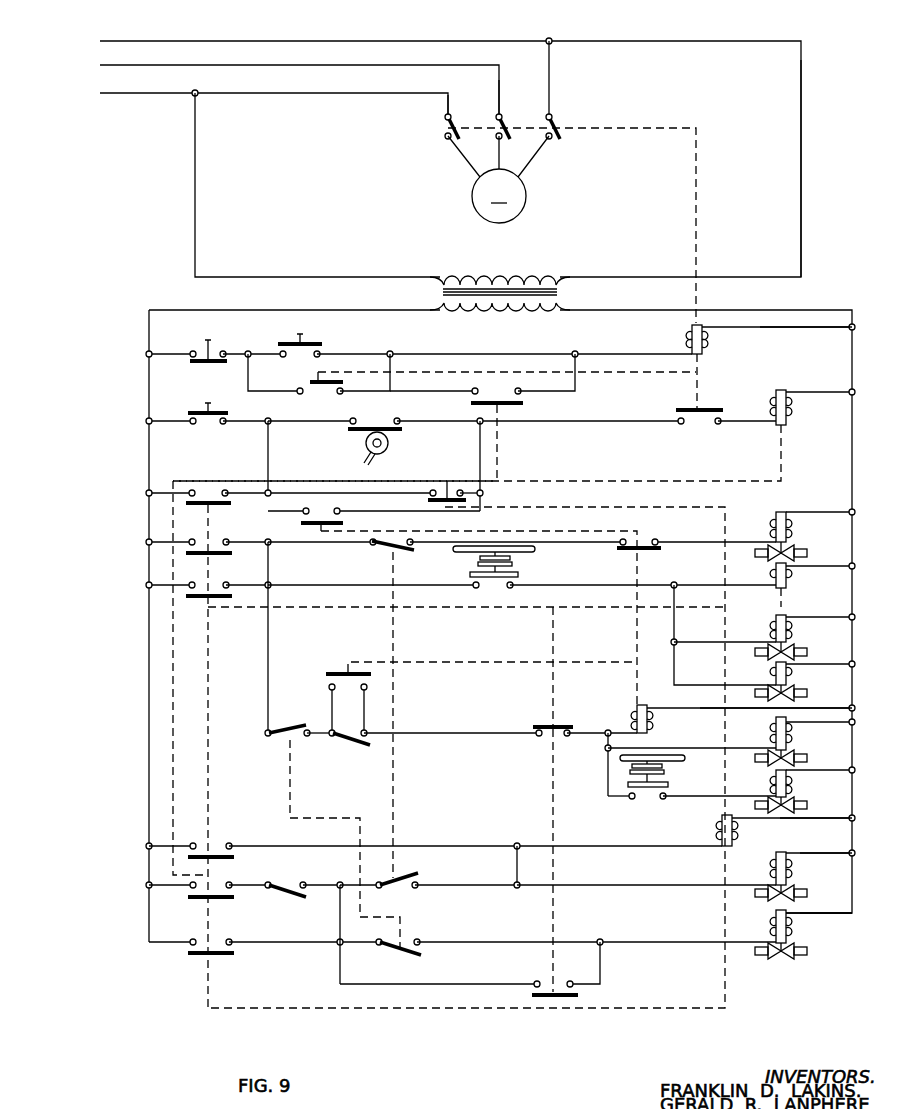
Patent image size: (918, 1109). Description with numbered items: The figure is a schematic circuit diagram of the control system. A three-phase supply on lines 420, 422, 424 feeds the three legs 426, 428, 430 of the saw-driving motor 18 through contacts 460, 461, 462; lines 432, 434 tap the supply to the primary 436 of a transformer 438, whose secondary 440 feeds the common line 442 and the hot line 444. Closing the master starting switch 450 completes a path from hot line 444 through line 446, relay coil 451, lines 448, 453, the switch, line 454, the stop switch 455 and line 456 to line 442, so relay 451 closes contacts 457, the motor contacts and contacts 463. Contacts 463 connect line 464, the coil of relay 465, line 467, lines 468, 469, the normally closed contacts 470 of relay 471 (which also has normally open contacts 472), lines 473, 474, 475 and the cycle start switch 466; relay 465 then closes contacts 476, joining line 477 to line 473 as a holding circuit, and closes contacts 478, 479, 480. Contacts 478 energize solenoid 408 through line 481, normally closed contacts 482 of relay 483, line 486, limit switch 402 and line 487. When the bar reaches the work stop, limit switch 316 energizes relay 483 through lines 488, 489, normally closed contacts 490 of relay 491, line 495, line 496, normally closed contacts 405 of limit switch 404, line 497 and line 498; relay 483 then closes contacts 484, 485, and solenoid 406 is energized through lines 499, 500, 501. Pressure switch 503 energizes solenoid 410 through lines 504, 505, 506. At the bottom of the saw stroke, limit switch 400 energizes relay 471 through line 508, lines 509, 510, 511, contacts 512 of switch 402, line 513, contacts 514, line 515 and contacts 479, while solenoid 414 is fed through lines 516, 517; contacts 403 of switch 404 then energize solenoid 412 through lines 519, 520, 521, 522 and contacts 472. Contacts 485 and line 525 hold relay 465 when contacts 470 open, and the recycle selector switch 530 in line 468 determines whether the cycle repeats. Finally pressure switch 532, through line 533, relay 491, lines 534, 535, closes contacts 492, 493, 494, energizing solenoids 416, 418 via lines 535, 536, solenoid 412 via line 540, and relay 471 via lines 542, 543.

The three-phase motor 18 is at (498, 179).
The power supply line 420 is at (598, 41).
The power supply line 422 is at (390, 65).
The power supply line 424 is at (310, 93).
The motor leg 426 is at (450, 104).
The motor leg 428 is at (501, 98).
The motor leg 430 is at (551, 72).
The tap line 432 is at (801, 182).
The tap line 434 is at (195, 188).
The transformer primary 436 is at (548, 256).
The transformer 438 is at (576, 296).
The transformer secondary 440 is at (531, 321).
The common line 442 is at (148, 320).
The hot line 444 is at (852, 316).
The line 446 is at (785, 327).
The line 448 is at (605, 354).
The master starting switch 450 is at (320, 344).
The relay coil 451 is at (708, 336).
The line 453 is at (440, 354).
The line 454 is at (238, 354).
The stop switch 455 is at (208, 365).
The line 456 is at (178, 348).
The relay contacts 457 is at (296, 382).
The motor contacts 460 is at (465, 123).
The motor contacts 461 is at (514, 124).
The motor contacts 462 is at (558, 128).
The relay contacts 463 is at (700, 427).
The line 464 is at (826, 392).
The relay 465 is at (787, 416).
The cycle start switch 466 is at (206, 427).
The line 467 is at (748, 421).
The line 468 is at (580, 421).
The line 469 is at (480, 447).
The normally closed contacts 470 is at (447, 485).
The relay 471 is at (733, 840).
The normally open contacts 472 is at (215, 958).
The line 473 is at (352, 481).
The line 474 is at (268, 445).
The line 475 is at (248, 421).
The relay contacts 476 is at (212, 510).
The line 477 is at (256, 475).
The normally open contacts 478 is at (210, 532).
The normally open contacts 479 is at (200, 900).
The normally open contacts 480 is at (496, 390).
The line 481 is at (700, 542).
The normally closed contacts 482 is at (640, 540).
The relay 483 is at (648, 728).
The normally open contacts 484 is at (336, 672).
The normally open contacts 485 is at (320, 497).
The line 486 is at (545, 543).
The line 487 is at (346, 548).
The line 488 is at (770, 708).
The line 489 is at (616, 723).
The normally closed contacts 490 is at (557, 725).
The relay 491 is at (787, 580).
The normally open contacts 492 is at (556, 982).
The normally open contacts 493 is at (222, 844).
The normally open contacts 494 is at (204, 585).
The line 495 is at (385, 733).
The line 496 is at (311, 716).
The line 497 is at (270, 560).
The line 498 is at (248, 542).
The line 499 is at (808, 723).
The line 500 is at (674, 739).
The line 501 is at (604, 748).
The pressure switch 503 is at (642, 800).
The line 504 is at (808, 774).
The line 505 is at (700, 798).
The line 506 is at (608, 780).
The line 508 is at (780, 818).
The line 509 is at (632, 846).
The line 510 is at (517, 862).
The line 511 is at (456, 877).
The limit switch contacts 512 is at (410, 870).
The line 513 is at (320, 885).
The limit switch contacts 514 is at (288, 895).
The line 515 is at (246, 885).
The line 516 is at (800, 853).
The line 517 is at (611, 884).
The line 519 is at (810, 913).
The line 520 is at (672, 942).
The line 521 is at (357, 942).
The line 522 is at (292, 942).
The line 525 is at (415, 511).
The recycle selector switch 530 is at (353, 445).
The pressure switch 532 is at (493, 588).
The line 533 is at (826, 550).
The line 534 is at (700, 585).
The line 535 is at (318, 585).
The line 536 is at (682, 685).
The line 540 is at (600, 984).
The line 542 is at (480, 846).
The line 543 is at (183, 846).
The limit switch 400 is at (291, 878).
The second limit switch 402 is at (380, 547).
The normally open contacts 403 is at (406, 936).
The limit switch 404 is at (299, 808).
The normally closed contacts 405 is at (286, 737).
The limit switch 316 is at (348, 740).
The solenoid 406 is at (788, 748).
The solenoid 408 is at (787, 526).
The solenoid 410 is at (788, 796).
The solenoid 412 is at (788, 940).
The solenoid 414 is at (788, 876).
The solenoid 416 is at (787, 636).
The solenoid 418 is at (787, 678).